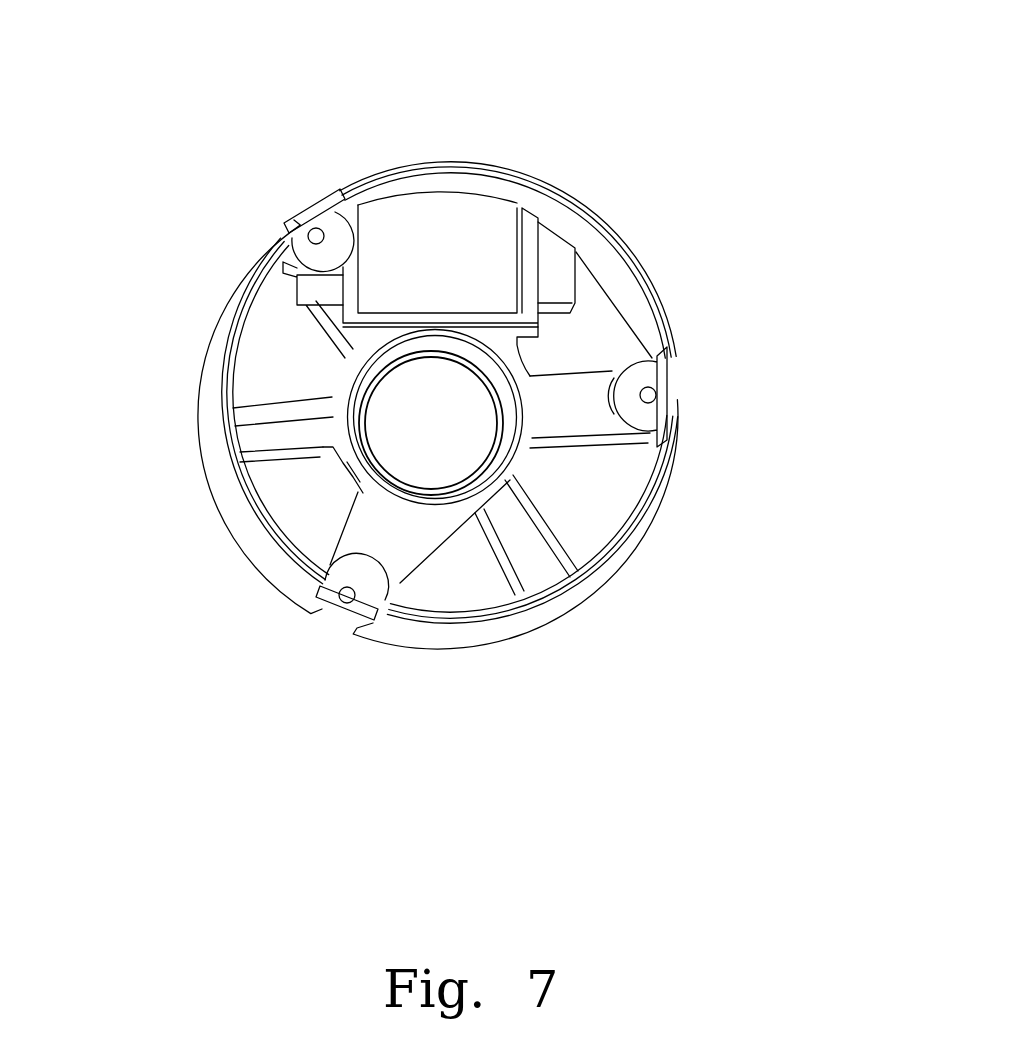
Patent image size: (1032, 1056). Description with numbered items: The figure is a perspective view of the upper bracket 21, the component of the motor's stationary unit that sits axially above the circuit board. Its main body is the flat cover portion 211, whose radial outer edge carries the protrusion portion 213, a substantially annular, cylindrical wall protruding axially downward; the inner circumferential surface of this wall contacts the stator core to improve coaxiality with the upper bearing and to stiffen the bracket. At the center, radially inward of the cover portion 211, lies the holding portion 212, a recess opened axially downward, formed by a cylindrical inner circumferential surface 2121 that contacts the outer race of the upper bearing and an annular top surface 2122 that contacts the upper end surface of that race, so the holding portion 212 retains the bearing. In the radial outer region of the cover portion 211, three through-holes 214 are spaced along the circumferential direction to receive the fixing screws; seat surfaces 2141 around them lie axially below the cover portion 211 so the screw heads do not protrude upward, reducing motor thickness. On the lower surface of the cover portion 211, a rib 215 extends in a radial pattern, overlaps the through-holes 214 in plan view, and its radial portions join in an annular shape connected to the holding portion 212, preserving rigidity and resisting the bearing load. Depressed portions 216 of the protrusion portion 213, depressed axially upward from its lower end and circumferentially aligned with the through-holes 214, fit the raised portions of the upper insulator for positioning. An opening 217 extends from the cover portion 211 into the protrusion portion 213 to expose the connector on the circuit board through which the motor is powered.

The upper bracket 21 is at (78, 109).
The cover portion 211 is at (300, 368).
The holding portion 212 is at (498, 482).
The inner circumferential surface 2121 is at (473, 353).
The top surface 2122 is at (495, 393).
The protrusion portion 213 is at (608, 265).
The through-holes 214 is at (313, 218).
The seat surfaces 2141 is at (335, 603).
The rib 215 is at (367, 535).
The depressed portions 216 is at (660, 372).
The opening 217 is at (517, 277).